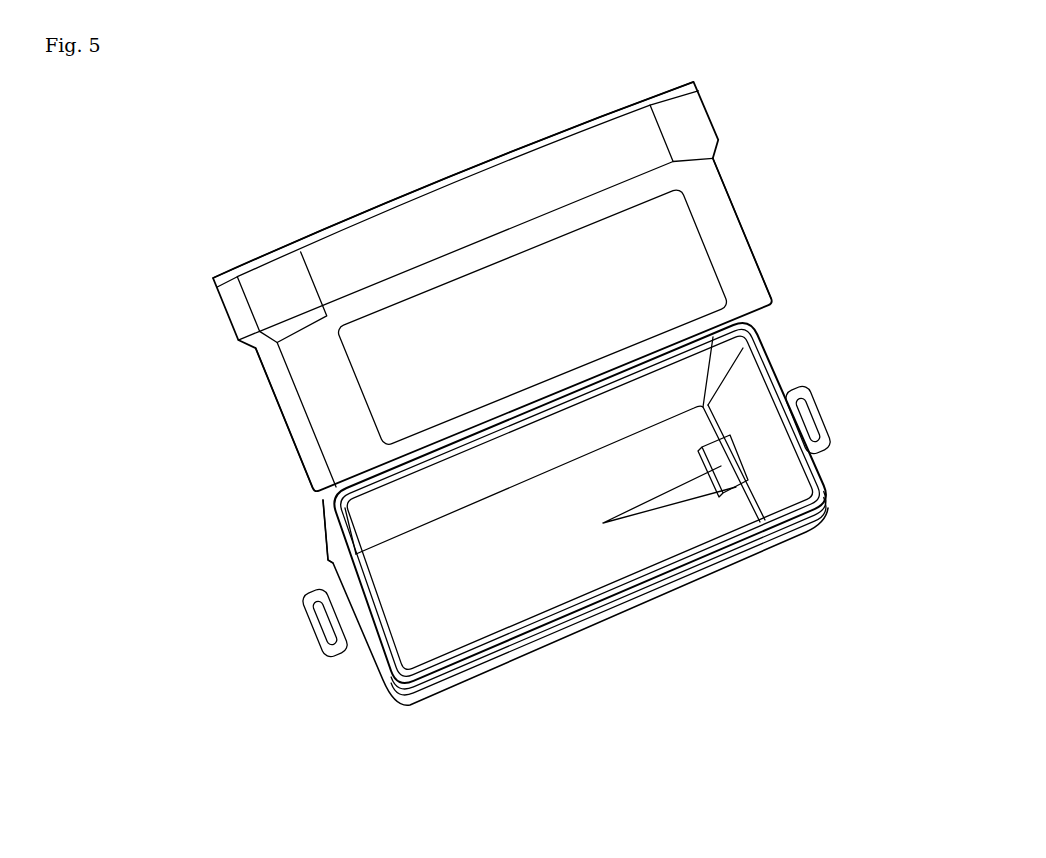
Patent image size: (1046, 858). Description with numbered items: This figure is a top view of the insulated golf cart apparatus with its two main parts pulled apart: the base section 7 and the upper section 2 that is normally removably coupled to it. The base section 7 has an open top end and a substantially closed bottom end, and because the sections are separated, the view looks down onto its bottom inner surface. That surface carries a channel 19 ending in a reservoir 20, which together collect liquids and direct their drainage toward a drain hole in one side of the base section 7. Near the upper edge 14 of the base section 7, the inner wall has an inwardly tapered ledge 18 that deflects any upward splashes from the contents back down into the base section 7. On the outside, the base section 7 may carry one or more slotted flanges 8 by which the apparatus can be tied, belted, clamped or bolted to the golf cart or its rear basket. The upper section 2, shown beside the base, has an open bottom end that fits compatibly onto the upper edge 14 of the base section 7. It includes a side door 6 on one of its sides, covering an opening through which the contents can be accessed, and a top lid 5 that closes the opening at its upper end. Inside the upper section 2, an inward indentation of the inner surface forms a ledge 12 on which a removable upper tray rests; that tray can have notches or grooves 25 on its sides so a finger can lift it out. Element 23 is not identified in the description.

The upper section 2 is at (688, 125).
The top lid 5 is at (337, 227).
The side door 6 is at (680, 272).
The base section 7 is at (662, 603).
The slotted flanges 8 is at (310, 630).
The ledge 12 is at (723, 152).
The upper edge 14 is at (573, 623).
The inwardly tapered ledge 18 is at (783, 422).
The channel 19 is at (682, 503).
The reservoir 20 is at (457, 598).
The hinge 23 is at (312, 583).
The notches or grooves 25 is at (740, 437).